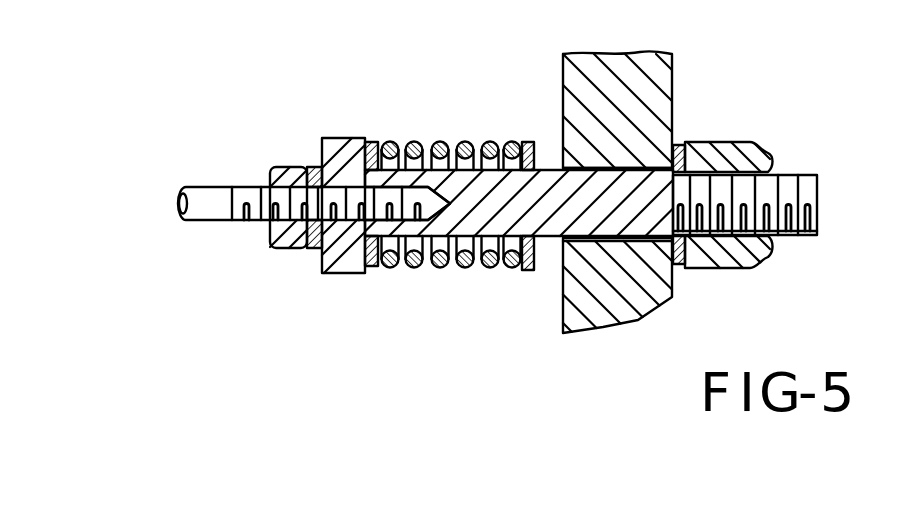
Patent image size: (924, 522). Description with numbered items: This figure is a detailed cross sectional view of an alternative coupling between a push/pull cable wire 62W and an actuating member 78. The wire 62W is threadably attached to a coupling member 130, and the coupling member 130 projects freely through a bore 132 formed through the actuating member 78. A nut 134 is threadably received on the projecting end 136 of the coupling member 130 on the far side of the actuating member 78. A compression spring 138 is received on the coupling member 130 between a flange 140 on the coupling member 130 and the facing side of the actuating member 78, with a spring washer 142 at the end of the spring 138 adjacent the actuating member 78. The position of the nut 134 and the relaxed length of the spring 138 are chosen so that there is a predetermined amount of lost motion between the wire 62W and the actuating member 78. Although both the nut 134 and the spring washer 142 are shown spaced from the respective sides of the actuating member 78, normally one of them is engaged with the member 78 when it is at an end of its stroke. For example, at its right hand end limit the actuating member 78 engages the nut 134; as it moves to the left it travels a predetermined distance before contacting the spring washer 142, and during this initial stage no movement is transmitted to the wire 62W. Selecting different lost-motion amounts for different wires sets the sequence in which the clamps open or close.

The wire 62W is at (203, 198).
The flange 140 is at (275, 168).
The coupling member 130 is at (550, 185).
The spring 138 is at (415, 142).
The spring washer 142 is at (535, 263).
The actuating member 78 is at (672, 72).
The bore 132 is at (594, 176).
The nut 134 is at (745, 145).
The projecting end 136 is at (830, 182).